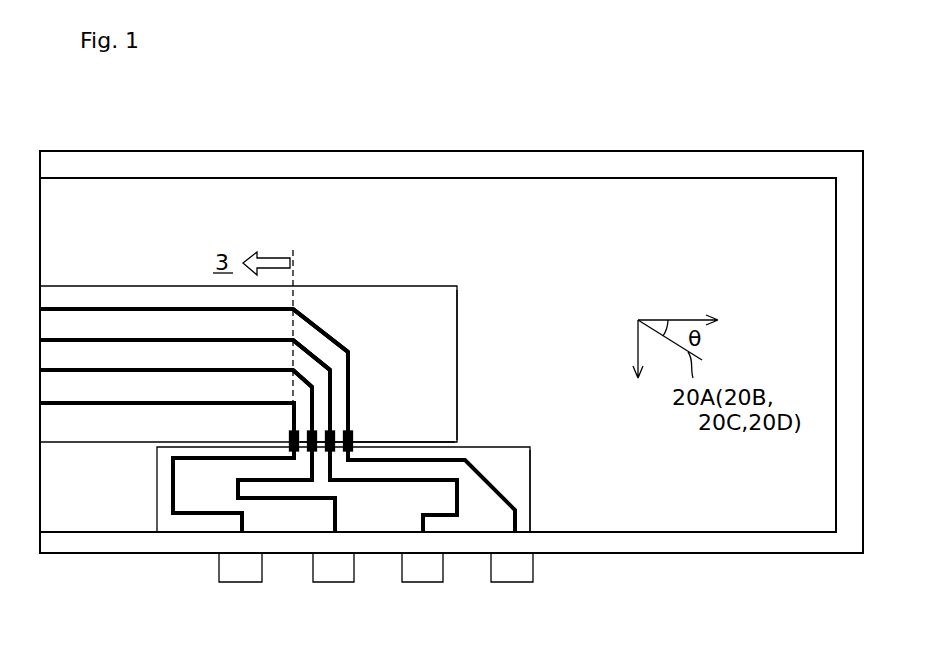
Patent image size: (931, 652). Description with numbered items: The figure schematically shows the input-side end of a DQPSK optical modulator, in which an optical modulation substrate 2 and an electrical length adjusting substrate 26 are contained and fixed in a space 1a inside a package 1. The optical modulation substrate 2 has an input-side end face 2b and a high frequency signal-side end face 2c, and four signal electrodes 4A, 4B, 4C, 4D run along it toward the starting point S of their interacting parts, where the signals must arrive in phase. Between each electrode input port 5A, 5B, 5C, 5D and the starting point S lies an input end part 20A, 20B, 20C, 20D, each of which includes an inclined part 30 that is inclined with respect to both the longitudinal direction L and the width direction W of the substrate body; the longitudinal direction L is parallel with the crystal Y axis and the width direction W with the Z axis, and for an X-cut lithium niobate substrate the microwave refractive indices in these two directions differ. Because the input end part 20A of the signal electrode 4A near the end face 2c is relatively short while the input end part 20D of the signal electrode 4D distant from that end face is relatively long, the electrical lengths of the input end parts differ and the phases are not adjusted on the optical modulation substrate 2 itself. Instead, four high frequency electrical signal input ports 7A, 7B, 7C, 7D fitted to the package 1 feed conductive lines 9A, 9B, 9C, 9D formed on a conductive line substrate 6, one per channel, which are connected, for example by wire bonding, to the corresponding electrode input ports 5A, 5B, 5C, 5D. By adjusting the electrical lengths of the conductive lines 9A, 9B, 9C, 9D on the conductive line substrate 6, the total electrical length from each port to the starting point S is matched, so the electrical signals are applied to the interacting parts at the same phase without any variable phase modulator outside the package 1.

The package 1 is at (847, 151).
The space 1a is at (643, 198).
The optical modulation substrate 2 is at (427, 290).
The input-side end face 2b is at (458, 302).
The high frequency signal-side end face 2c is at (435, 438).
The starting point of the interacting part S is at (297, 255).
The signal electrode 4A is at (92, 405).
The signal electrode 4B is at (105, 371).
The signal electrode 4C is at (130, 341).
The signal electrode 4D is at (143, 307).
The input end part 20A is at (293, 404).
The input end part 20B is at (315, 388).
The input end part 20C is at (333, 362).
The input end part 20D is at (345, 345).
The inclined part 30 is at (321, 334).
The electrode input port 5A is at (290, 430).
The electrode input port 5B is at (315, 430).
The electrode input port 5C is at (333, 431).
The electrode input port 5D is at (351, 432).
The electrical length adjusting substrate 26 is at (528, 442).
The conductive line substrate 6 is at (522, 458).
The conductive line 9A is at (172, 488).
The conductive line 9B is at (237, 490).
The conductive line 9C is at (413, 483).
The conductive line 9D is at (492, 487).
The high frequency electrical signal input port 7A is at (241, 572).
The high frequency electrical signal input port 7B is at (332, 572).
The high frequency electrical signal input port 7C is at (422, 572).
The high frequency electrical signal input port 7D is at (512, 572).
The longitudinal direction L is at (683, 315).
The width direction W is at (633, 357).